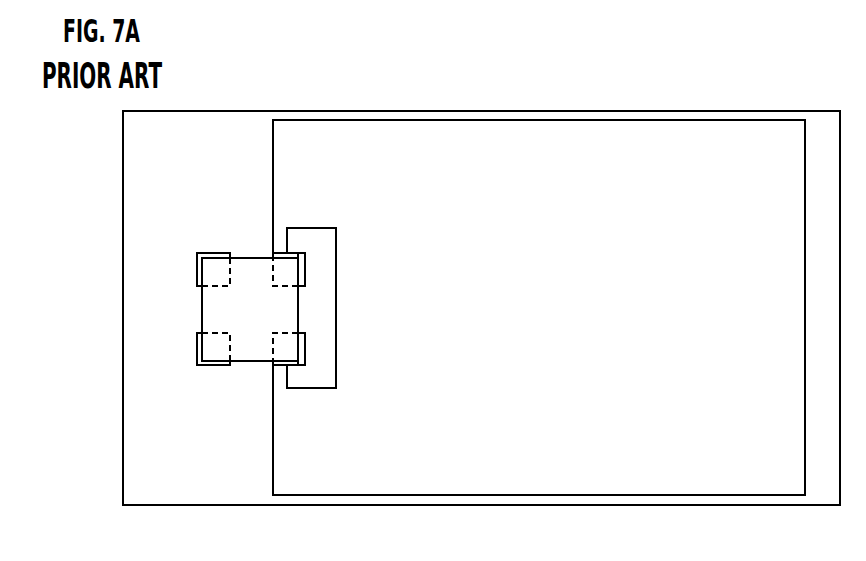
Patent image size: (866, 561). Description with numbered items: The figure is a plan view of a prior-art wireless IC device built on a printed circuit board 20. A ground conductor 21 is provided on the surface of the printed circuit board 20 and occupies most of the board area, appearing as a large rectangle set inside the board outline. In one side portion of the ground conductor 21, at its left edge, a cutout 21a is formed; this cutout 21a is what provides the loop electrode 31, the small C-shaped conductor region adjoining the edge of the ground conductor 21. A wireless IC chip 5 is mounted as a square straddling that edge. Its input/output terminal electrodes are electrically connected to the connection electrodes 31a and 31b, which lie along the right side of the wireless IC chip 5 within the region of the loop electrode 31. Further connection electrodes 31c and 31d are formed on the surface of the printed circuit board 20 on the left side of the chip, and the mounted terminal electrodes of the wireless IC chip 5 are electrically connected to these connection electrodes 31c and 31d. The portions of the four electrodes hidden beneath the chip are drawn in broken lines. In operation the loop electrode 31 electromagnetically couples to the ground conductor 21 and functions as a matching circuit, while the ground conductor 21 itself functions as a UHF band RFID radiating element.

The printed circuit board 20 is at (197, 111).
The ground conductor 21 is at (427, 127).
The cutout 21a is at (322, 314).
The wireless IC chip 5 is at (202, 314).
The loop electrode 31 is at (266, 239).
The connection electrode 31a is at (306, 273).
The connection electrode 31b is at (306, 350).
The connection electrode 31c is at (208, 253).
The connection electrode 31d is at (208, 366).